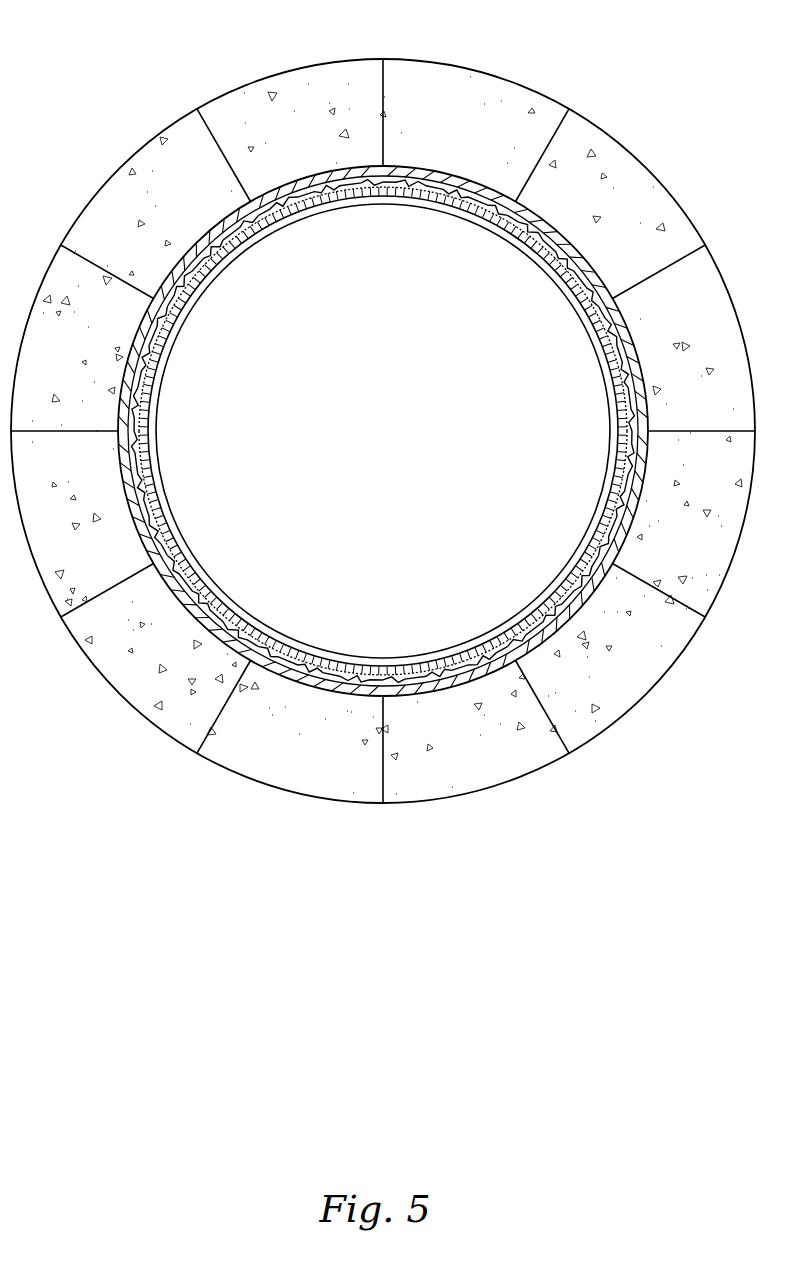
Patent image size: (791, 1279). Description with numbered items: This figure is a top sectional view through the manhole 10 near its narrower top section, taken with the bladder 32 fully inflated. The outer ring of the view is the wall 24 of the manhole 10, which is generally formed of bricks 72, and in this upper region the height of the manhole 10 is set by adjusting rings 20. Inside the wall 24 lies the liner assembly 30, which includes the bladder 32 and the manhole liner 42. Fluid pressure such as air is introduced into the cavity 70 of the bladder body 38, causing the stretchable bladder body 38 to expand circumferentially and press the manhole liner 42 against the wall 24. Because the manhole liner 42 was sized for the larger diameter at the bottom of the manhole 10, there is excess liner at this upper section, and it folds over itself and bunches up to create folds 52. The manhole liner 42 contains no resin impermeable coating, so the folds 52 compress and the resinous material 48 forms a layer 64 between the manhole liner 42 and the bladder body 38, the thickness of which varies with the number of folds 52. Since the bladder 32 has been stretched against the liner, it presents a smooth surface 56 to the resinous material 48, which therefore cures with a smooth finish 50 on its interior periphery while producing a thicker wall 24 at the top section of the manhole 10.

The manhole 10 is at (620, 55).
The adjusting rings 20 is at (527, 107).
The wall 24 is at (598, 580).
The liner assembly 30 is at (607, 430).
The bladder 32 is at (519, 601).
The bladder body 38 is at (275, 648).
The manhole liner 42 is at (612, 528).
The resinous material 48 is at (138, 420).
The smooth finish 50 is at (195, 578).
The folds 52 is at (142, 348).
The smooth surface 56 is at (562, 252).
The layer of resinous material 64 is at (140, 490).
The cavity 70 is at (373, 439).
The bricks 72 is at (228, 102).